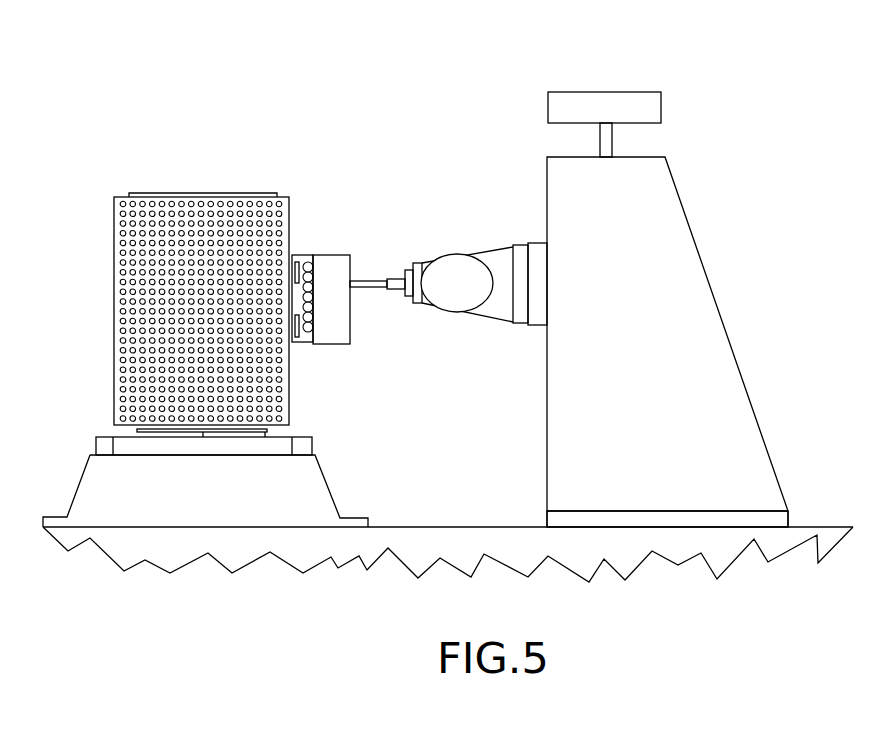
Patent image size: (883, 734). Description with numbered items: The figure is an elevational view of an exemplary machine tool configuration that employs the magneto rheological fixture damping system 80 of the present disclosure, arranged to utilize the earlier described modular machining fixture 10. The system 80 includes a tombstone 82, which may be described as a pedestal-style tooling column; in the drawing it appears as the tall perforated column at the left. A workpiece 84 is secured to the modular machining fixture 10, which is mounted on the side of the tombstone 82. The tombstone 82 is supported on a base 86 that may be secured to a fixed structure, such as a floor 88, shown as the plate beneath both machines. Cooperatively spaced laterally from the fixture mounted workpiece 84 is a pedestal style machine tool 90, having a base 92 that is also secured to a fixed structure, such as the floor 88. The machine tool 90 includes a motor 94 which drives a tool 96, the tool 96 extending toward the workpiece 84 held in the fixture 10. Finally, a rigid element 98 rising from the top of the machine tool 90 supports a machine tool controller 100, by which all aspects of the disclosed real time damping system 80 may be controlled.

The magneto rheological fixture damping system 80 is at (136, 102).
The tombstone 82 is at (135, 265).
The base 86 is at (90, 497).
The floor 88 is at (432, 538).
The modular machining fixture 10 is at (302, 257).
The workpiece 84 is at (332, 255).
The tool 96 is at (370, 280).
The motor 94 is at (457, 280).
The pedestal style machine tool 90 is at (682, 245).
The base 92 is at (782, 522).
The rigid element 98 is at (612, 138).
The machine tool controller 100 is at (662, 103).